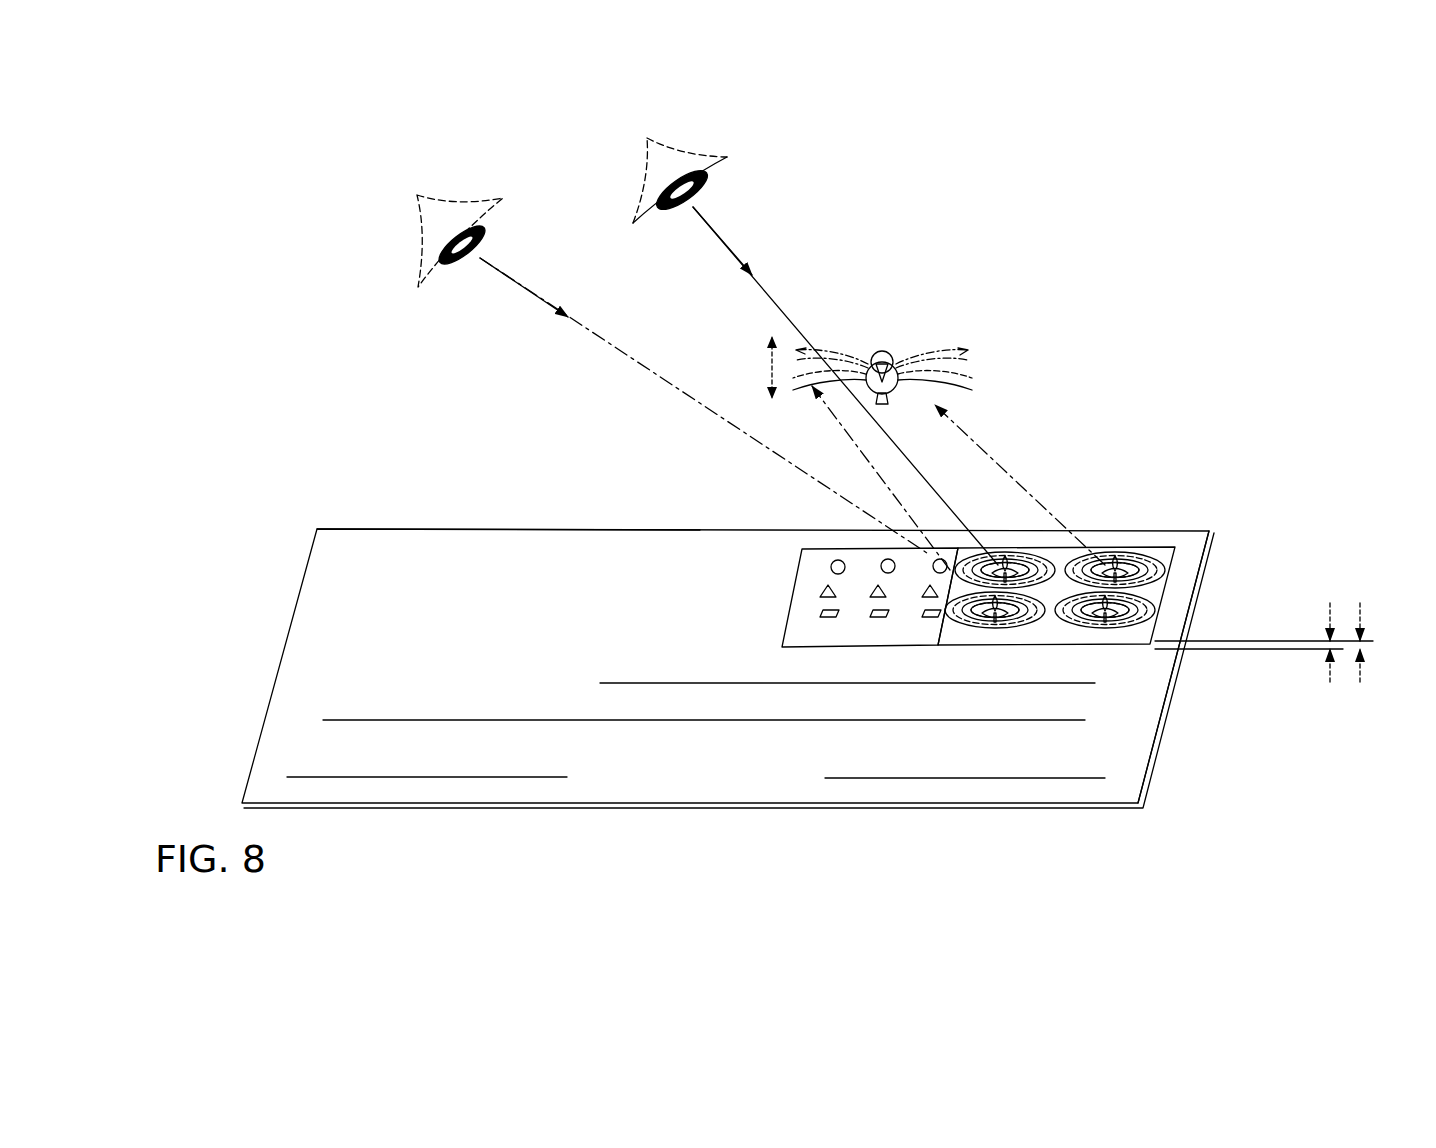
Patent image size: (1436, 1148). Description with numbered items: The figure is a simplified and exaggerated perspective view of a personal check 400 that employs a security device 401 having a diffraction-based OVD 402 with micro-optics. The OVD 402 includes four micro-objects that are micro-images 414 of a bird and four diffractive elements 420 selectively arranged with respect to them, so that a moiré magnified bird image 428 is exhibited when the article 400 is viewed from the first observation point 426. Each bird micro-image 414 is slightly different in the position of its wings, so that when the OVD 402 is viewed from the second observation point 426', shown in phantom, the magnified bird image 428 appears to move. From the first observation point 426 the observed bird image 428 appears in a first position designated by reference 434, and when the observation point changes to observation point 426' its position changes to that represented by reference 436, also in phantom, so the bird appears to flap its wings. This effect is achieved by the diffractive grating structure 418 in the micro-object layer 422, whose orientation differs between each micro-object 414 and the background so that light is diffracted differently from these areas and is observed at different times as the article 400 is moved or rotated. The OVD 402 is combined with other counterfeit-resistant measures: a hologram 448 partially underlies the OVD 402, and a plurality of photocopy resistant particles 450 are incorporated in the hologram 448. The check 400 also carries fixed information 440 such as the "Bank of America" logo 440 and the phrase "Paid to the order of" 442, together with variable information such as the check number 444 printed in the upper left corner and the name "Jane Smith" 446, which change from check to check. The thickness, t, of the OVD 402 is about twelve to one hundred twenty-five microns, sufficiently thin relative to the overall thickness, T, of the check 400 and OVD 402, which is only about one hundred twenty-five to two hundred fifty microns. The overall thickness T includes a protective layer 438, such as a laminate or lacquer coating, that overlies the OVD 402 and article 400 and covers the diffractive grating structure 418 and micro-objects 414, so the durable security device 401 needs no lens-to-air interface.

The article 400 is at (965, 794).
The security device 401 is at (605, 864).
The diffraction-based OVD 402 is at (1213, 558).
The micro-objects 414 is at (1018, 556).
The diffractive grating structure 418 is at (1123, 556).
The diffractive elements 420 is at (990, 632).
The micro-object layer 422 is at (957, 627).
The first observation point 426 is at (815, 329).
The second observation point 426' is at (617, 375).
The moiré magnified bird image 428 is at (902, 340).
The first position of magnified bird image 434 is at (927, 377).
The second position of magnified bird image 436 is at (962, 366).
The protective layer 438 is at (472, 548).
The fixed information 440 is at (583, 597).
The phrase "Paid to the order of" 442 is at (338, 677).
The check number 444 is at (328, 557).
The name of the individual 446 is at (340, 588).
The hologram 448 is at (822, 590).
The photocopy resistant particles 450 is at (834, 562).
The thickness of OVD t is at (1362, 612).
The overall thickness T is at (1330, 678).